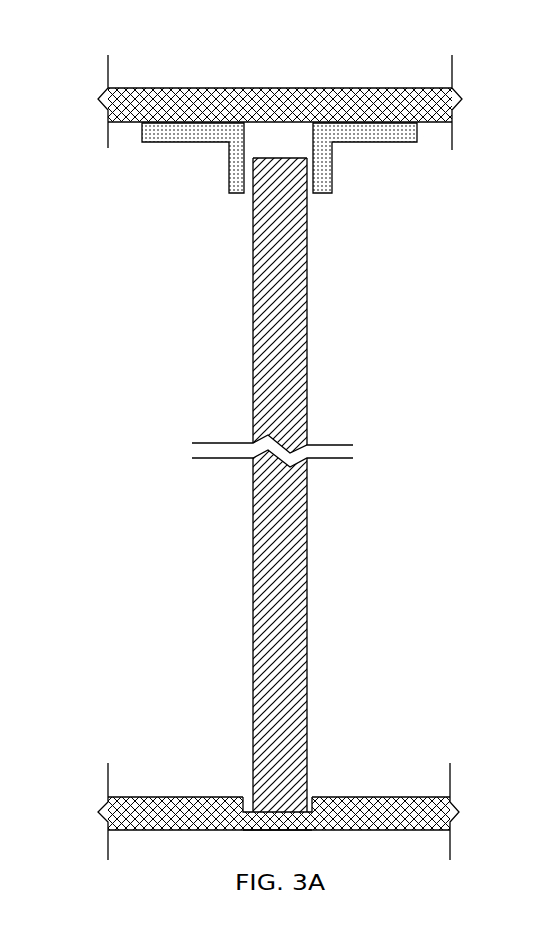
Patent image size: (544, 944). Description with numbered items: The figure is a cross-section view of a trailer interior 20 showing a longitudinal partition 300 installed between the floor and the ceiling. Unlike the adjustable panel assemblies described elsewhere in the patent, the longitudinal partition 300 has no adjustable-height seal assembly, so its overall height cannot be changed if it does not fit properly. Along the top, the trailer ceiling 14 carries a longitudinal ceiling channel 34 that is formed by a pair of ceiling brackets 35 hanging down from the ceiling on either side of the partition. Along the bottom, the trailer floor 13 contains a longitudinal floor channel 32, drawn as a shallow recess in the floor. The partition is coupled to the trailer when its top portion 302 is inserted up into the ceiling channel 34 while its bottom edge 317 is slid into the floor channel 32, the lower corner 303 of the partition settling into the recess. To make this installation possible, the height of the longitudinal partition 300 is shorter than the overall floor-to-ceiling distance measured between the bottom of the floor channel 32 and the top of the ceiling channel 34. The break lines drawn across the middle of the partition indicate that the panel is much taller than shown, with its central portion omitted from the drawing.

The wall assembly 20 is at (82, 53).
The ceiling 14 is at (300, 100).
The floor 13 is at (278, 809).
The ceiling channel 34 is at (369, 187).
The ceiling brackets 35 is at (365, 135).
The longitudinal partition 300 is at (240, 485).
The top portion 302 is at (316, 212).
The panel bottom corner 303 is at (321, 779).
The floor channel 32 is at (240, 788).
The bottom edge 317 is at (277, 830).